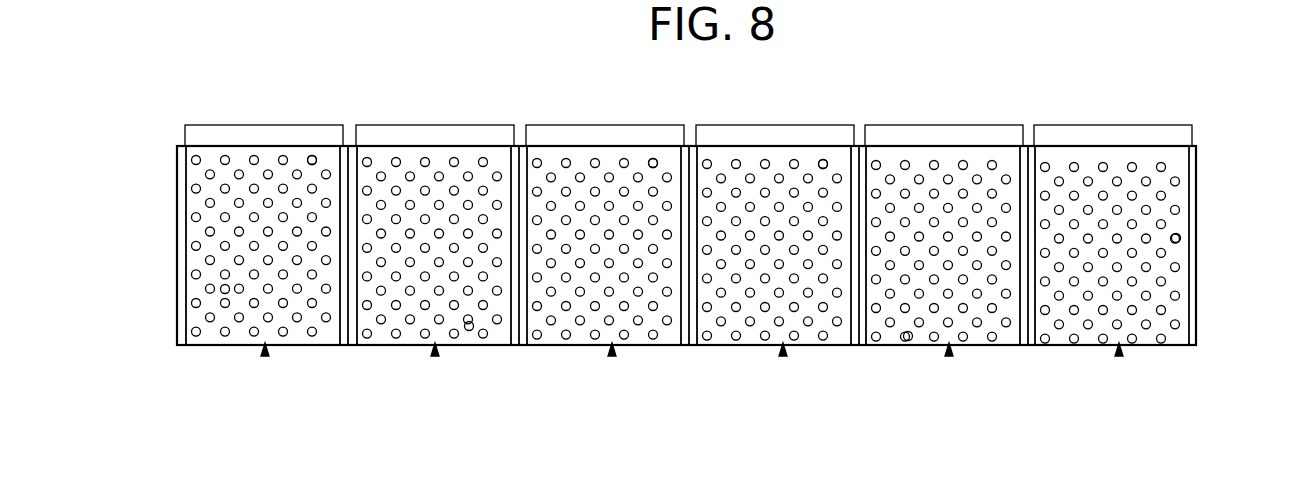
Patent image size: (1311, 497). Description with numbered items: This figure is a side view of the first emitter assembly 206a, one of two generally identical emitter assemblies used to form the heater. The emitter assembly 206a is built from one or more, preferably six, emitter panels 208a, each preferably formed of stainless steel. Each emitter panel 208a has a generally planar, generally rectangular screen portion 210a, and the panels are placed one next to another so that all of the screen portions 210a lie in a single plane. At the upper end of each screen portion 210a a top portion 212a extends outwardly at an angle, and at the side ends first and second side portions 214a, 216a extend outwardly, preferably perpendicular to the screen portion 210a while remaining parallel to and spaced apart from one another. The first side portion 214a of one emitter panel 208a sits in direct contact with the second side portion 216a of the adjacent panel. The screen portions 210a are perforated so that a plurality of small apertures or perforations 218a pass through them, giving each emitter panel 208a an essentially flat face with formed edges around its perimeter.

The first emitter assembly 206a is at (850, 56).
The emitter panel 208a is at (265, 352).
The screen portion 210a is at (214, 156).
The top portion 212a is at (278, 140).
The first side portion 214a is at (177, 243).
The second side portion 216a is at (340, 338).
The perforations 218a is at (314, 156).